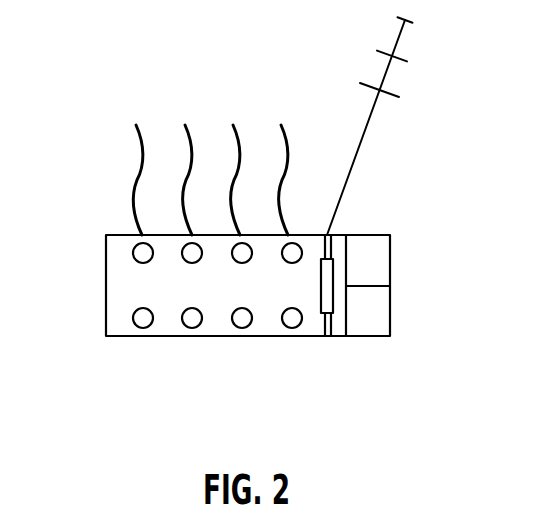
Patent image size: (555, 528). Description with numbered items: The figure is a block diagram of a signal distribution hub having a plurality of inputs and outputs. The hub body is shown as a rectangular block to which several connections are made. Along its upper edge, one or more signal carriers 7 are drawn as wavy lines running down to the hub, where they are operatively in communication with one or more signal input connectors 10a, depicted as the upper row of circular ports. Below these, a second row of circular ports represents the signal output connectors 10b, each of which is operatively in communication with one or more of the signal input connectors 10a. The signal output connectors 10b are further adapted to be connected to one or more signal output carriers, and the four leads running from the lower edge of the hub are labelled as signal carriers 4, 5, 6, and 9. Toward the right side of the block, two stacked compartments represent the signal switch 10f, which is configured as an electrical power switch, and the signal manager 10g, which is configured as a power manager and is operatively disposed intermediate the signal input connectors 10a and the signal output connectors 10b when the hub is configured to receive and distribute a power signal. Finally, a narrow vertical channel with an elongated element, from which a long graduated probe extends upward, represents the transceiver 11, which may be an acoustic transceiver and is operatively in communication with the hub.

The signal carrier 7 is at (94, 116).
The signal carrier 4 is at (143, 337).
The signal carrier 5 is at (192, 337).
The signal carrier 6 is at (242, 337).
The signal carrier 9 is at (290, 337).
The signal input connector 10a is at (117, 250).
The signal output connector 10b is at (117, 318).
The signal switch 10f is at (375, 257).
The signal manager 10g is at (375, 308).
The transceiver 11 is at (327, 232).